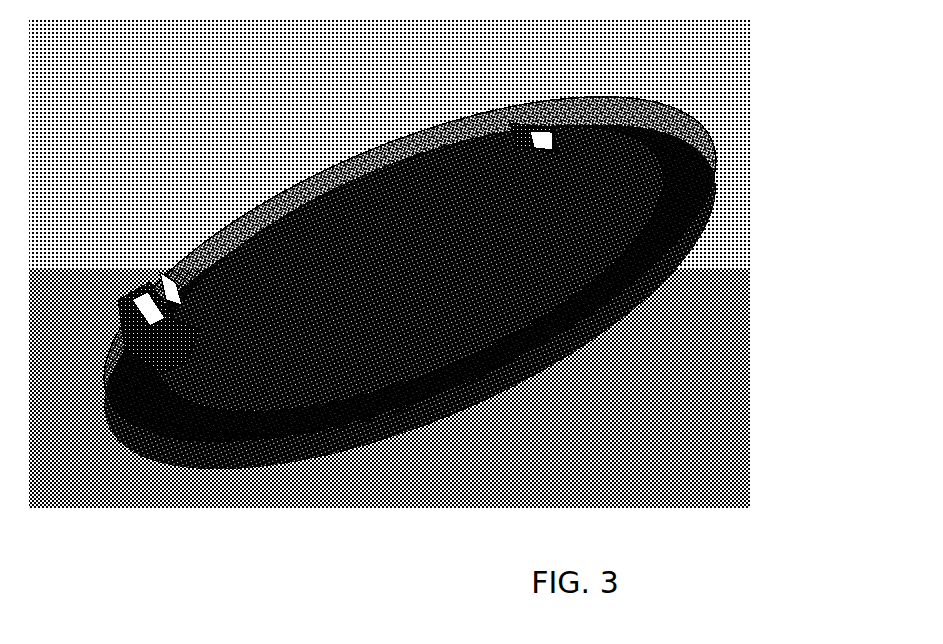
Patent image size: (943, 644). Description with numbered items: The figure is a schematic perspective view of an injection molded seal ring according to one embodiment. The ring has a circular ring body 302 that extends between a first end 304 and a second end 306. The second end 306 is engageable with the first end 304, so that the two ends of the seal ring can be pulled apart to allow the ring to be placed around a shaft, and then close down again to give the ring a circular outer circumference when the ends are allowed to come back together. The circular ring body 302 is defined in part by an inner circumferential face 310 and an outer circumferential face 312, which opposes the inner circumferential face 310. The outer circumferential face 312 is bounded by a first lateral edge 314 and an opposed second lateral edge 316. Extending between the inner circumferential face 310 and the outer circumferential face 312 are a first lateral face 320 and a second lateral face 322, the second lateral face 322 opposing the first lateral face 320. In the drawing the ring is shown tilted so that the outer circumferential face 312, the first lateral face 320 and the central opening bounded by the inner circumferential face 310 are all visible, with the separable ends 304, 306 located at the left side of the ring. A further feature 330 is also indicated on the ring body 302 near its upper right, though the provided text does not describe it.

The circular ring body 302 is at (410, 283).
The first end 304 is at (161, 252).
The second end 306 is at (128, 292).
The inner circumferential face 310 is at (418, 380).
The outer circumferential face 312 is at (410, 269).
The first lateral edge 314 is at (473, 172).
The second lateral edge 316 is at (299, 180).
The first lateral face 320 is at (410, 269).
The second lateral face 322 is at (314, 372).
The electronics module 330 is at (518, 92).